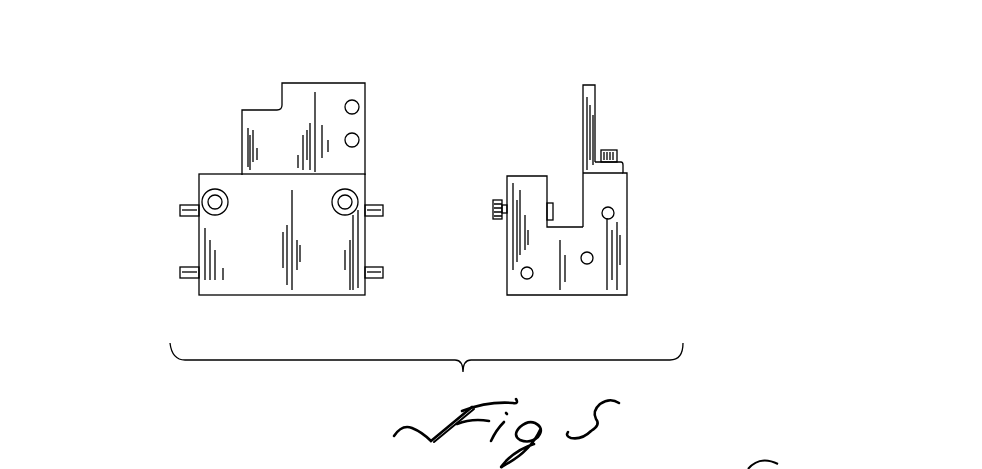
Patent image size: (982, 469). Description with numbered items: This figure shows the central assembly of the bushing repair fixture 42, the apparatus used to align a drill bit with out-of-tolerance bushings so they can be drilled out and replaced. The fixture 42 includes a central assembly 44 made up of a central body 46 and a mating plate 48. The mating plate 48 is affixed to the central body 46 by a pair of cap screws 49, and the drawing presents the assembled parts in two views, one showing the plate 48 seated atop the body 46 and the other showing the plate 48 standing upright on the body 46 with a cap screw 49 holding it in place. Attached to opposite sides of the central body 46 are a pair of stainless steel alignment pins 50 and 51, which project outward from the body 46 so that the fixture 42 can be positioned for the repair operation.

The bushing repair fixture 42 is at (672, 167).
The central assembly 44 is at (366, 175).
The central body 46 is at (627, 257).
The mating plate 48 is at (582, 102).
The cap screws 49 is at (606, 150).
The alignment pin 50 is at (385, 210).
The alignment pin 51 is at (180, 270).